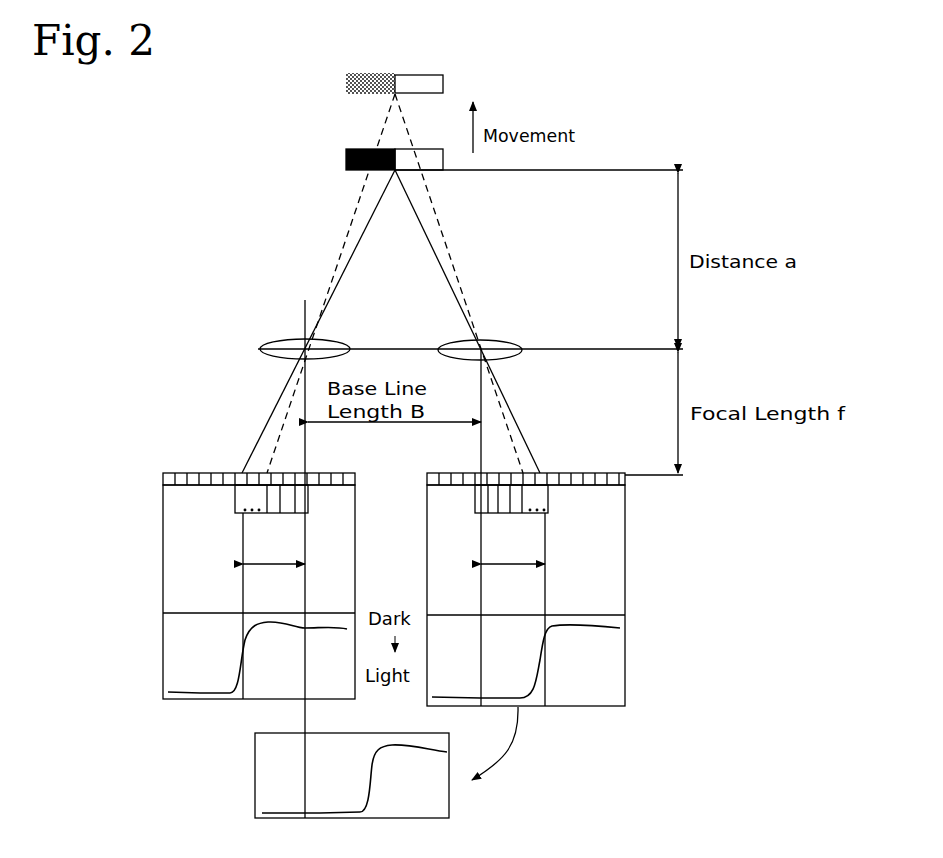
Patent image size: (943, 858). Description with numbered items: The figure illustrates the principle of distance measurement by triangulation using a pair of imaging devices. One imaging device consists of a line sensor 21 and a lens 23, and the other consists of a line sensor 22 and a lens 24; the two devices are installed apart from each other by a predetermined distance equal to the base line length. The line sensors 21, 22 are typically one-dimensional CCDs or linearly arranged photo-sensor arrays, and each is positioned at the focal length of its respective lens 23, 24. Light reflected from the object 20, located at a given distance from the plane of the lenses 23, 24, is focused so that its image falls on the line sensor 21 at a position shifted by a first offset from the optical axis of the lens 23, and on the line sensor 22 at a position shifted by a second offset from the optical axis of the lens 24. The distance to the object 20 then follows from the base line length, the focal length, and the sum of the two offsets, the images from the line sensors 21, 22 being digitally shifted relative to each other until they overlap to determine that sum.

The object 20 is at (347, 158).
The line sensor 21 is at (162, 482).
The line sensor 22 is at (626, 478).
The lens 23 is at (266, 346).
The lens 24 is at (509, 341).